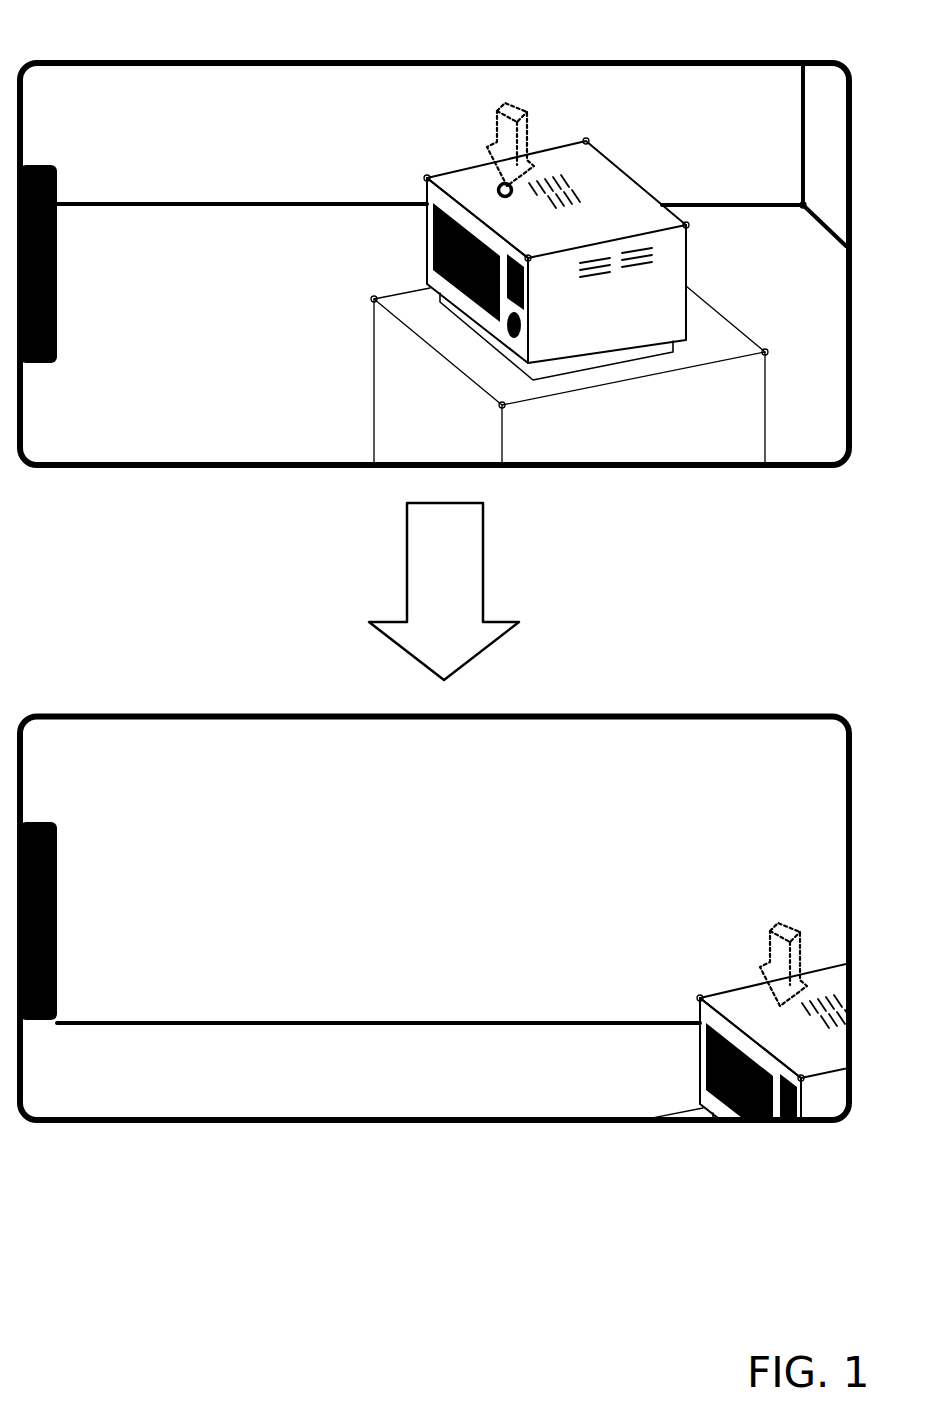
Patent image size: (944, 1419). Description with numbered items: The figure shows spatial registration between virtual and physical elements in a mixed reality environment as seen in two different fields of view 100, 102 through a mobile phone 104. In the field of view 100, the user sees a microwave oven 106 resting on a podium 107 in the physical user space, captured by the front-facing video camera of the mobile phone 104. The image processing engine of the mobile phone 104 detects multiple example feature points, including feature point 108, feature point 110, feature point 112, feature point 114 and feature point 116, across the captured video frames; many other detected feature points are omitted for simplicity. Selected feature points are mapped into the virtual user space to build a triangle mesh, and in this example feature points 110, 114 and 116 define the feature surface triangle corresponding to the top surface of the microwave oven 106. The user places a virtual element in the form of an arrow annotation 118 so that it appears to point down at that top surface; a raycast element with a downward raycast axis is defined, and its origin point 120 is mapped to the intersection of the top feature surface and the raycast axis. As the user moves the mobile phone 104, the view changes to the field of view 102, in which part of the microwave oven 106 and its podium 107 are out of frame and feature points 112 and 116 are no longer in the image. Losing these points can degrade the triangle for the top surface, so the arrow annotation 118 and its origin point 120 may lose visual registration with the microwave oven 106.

The field of view 100 is at (92, 96).
The field of view 102 is at (92, 752).
The mobile phone 104 is at (719, 62).
The microwave oven 106 is at (427, 257).
The podium 107 is at (374, 393).
The feature point 108 is at (374, 299).
The feature point 110 is at (530, 262).
The feature point 112 is at (688, 228).
The feature point 114 is at (427, 178).
The feature point 116 is at (588, 137).
The arrow annotation 118 is at (494, 124).
The origin point 120 is at (500, 185).